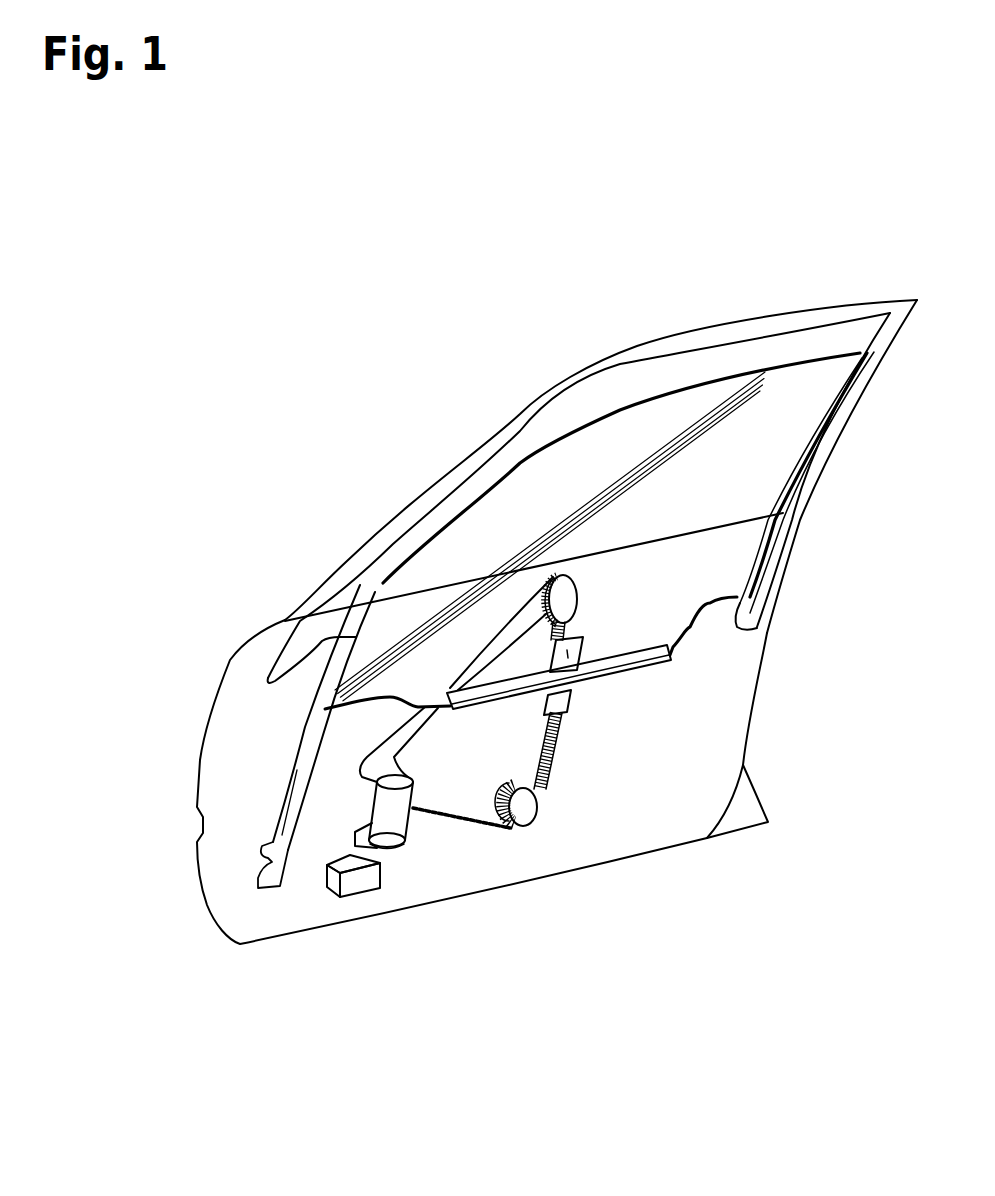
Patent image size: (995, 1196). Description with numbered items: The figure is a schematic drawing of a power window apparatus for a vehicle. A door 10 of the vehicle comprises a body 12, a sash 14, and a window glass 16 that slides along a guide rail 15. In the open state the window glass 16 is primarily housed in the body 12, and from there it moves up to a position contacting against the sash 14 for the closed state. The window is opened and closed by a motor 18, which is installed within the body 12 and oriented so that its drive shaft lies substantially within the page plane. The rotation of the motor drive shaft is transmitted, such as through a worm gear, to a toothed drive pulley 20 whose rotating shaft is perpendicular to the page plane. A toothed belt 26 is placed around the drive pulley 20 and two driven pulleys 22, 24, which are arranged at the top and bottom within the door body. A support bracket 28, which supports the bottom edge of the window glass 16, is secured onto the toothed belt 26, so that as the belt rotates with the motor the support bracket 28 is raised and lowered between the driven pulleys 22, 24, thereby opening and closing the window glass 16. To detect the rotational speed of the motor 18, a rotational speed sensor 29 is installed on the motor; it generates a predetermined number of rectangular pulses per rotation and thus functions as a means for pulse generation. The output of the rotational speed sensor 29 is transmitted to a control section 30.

The door 10 is at (522, 390).
The body 12 is at (210, 700).
The sash 14 is at (563, 377).
The guide rail 15 is at (737, 613).
The window glass 16 is at (767, 373).
The motor 18 is at (417, 820).
The toothed drive pulley 20 is at (400, 767).
The driven pulley 22 is at (565, 600).
The driven pulley 24 is at (528, 807).
The toothed belt 26 is at (550, 742).
The support bracket 28 is at (607, 680).
The rotational speed sensor 29 is at (400, 823).
The control section 30 is at (358, 883).